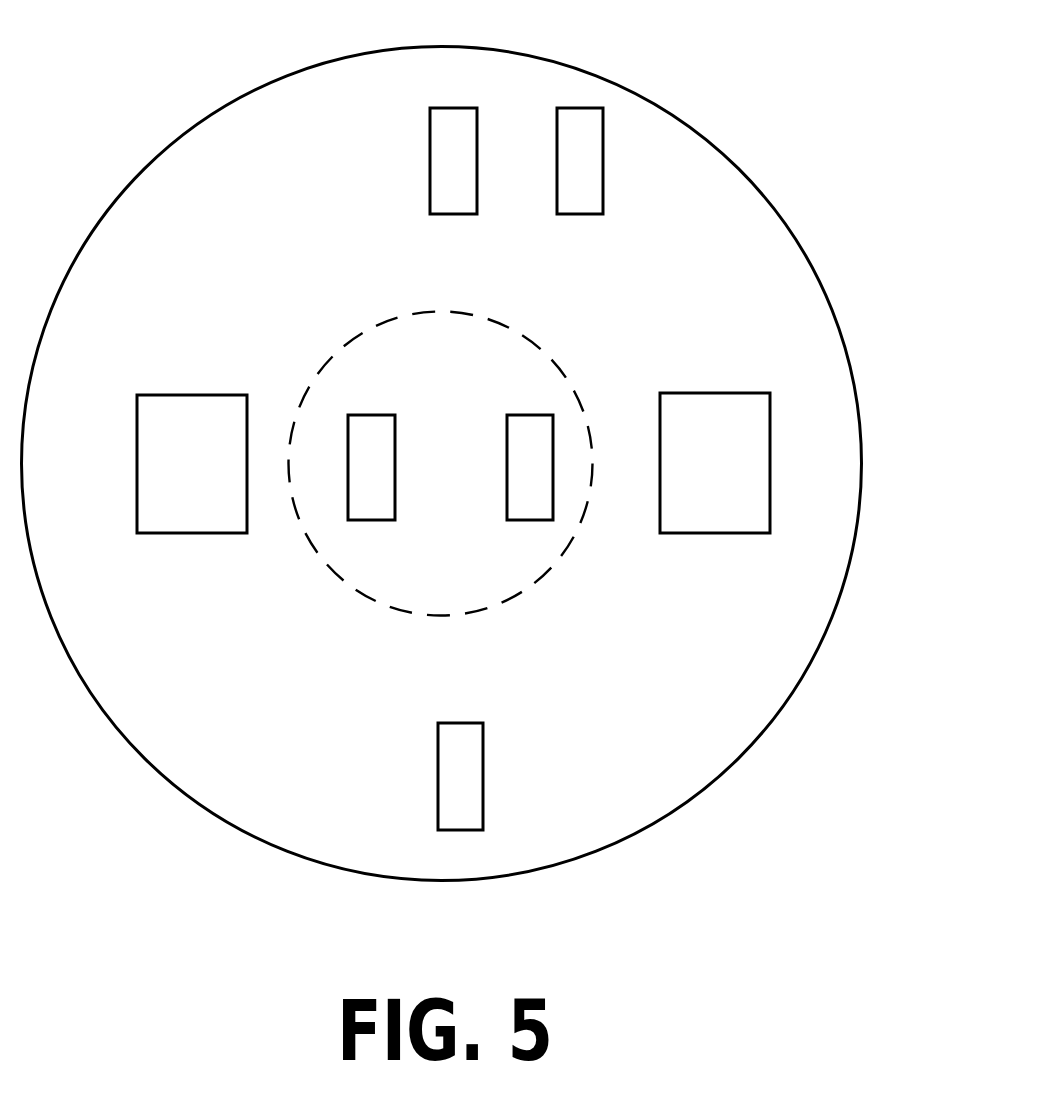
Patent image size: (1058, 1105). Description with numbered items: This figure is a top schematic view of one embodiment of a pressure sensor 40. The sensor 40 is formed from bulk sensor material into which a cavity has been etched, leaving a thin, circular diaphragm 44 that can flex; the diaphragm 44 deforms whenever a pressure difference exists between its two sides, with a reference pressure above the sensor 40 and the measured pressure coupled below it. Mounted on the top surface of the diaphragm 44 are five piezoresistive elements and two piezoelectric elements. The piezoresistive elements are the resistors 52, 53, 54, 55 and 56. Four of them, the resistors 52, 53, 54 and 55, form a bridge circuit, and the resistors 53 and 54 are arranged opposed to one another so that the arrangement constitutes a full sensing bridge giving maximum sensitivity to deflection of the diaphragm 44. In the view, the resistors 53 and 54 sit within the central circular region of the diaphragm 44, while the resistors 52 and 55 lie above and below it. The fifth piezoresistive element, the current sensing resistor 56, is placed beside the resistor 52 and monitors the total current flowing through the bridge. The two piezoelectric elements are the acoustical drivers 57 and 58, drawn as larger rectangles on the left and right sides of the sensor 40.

The sensor 40 is at (676, 116).
The diaphragm 44 is at (563, 367).
The resistor 52 is at (477, 177).
The resistor 53 is at (358, 520).
The resistor 54 is at (525, 520).
The resistor 55 is at (483, 788).
The current sensing resistor 56 is at (565, 214).
The acoustical driver 57 is at (208, 533).
The acoustical driver 58 is at (732, 533).